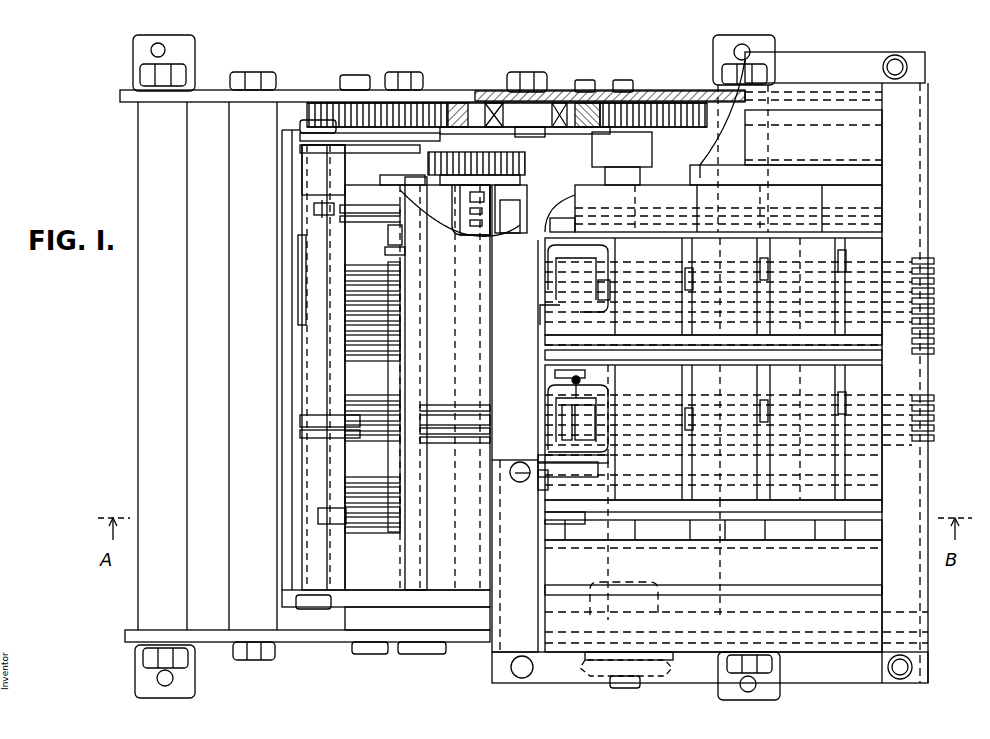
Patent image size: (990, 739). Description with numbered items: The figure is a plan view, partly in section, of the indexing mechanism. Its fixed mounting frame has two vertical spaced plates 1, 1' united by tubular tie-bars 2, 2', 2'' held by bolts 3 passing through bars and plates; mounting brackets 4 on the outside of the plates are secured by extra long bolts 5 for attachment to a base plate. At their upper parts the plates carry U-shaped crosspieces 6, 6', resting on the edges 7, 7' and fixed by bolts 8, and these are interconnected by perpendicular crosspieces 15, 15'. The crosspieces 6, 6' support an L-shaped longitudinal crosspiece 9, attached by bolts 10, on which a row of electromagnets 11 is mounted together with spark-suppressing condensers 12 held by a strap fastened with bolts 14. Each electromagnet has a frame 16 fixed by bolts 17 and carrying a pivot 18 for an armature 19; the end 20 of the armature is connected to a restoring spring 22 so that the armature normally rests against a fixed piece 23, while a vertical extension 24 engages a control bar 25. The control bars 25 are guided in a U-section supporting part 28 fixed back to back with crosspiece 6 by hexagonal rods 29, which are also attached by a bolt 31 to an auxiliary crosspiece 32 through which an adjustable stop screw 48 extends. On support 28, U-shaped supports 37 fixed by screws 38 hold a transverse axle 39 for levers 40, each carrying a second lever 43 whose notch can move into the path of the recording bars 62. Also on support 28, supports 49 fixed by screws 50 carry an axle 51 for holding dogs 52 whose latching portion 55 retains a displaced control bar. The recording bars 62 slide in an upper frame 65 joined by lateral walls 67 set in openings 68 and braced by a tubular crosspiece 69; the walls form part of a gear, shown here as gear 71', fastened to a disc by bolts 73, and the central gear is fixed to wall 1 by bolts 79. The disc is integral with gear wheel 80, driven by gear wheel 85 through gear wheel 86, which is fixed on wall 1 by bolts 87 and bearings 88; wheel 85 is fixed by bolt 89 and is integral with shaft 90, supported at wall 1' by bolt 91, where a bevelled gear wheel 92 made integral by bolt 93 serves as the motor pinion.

The vertical plate 1 is at (432, 83).
The vertical plate 1' is at (307, 649).
The tubular tie-bar 2 is at (162, 366).
The tubular tie-bar 2' is at (737, 133).
The tubular tie-bar 2'' is at (253, 366).
The bolt 3 is at (268, 84).
The mounting bracket 4 is at (186, 57).
The extra long bolt 5 is at (182, 75).
The U-shaped crosspiece 6 is at (520, 418).
The U-shaped crosspiece 6' is at (905, 383).
The edge of vertical plate 7 is at (835, 67).
The edge of vertical plate 7' is at (710, 667).
The bolt 8 is at (533, 667).
The L-shaped longitudinal crosspiece 9 is at (508, 480).
The bolt 10 is at (554, 472).
The electromagnet 11 is at (582, 415).
The condenser 12 is at (640, 420).
The bolt 14 is at (560, 468).
The crosspiece 15 is at (736, 508).
The crosspiece 15' is at (786, 138).
The frame of electromagnet 16 is at (650, 398).
The bolt 17 is at (713, 485).
The pivot 18 is at (583, 422).
The armature 19 is at (548, 395).
The end of armature 20 is at (580, 380).
The restoring spring of armature 22 is at (578, 385).
The fixed piece 23 is at (545, 378).
The vertical extension of armature 24 is at (540, 458).
The control bar 25 is at (918, 398).
The supporting part 28 is at (418, 195).
The hexagonal rod 29 is at (365, 150).
The bolt 31 is at (323, 367).
The auxiliary crosspiece 32 is at (311, 280).
The U-shaped support 37 is at (390, 218).
The screw 38 is at (390, 238).
The transverse axle 39 is at (388, 252).
The lever 40 is at (397, 210).
The second lever 43 is at (585, 480).
The screw 48 is at (314, 209).
The support 49 is at (470, 405).
The screw 50 is at (470, 435).
The axle 51 is at (470, 443).
The holding dog 52 is at (470, 415).
The latching portion 55 is at (380, 425).
The recording bar 62 is at (462, 230).
The upper frame 65 is at (480, 195).
The lateral wall 67 is at (520, 193).
The opening 68 is at (478, 190).
The tubular crosspiece 69 is at (512, 218).
The drive block 71' is at (606, 158).
The bolt 73 is at (448, 190).
The bolt 79 is at (395, 75).
The gear wheel 80 is at (376, 103).
The gear wheel 85 is at (690, 110).
The gear wheel 86 is at (458, 103).
The bolt 87 is at (545, 82).
The bearing 88 is at (545, 127).
The bolt 89 is at (628, 80).
The shaft 90 is at (625, 180).
The bolt 91 is at (632, 626).
The bevelled gear wheel 92 is at (665, 668).
The bolt 93 is at (640, 684).